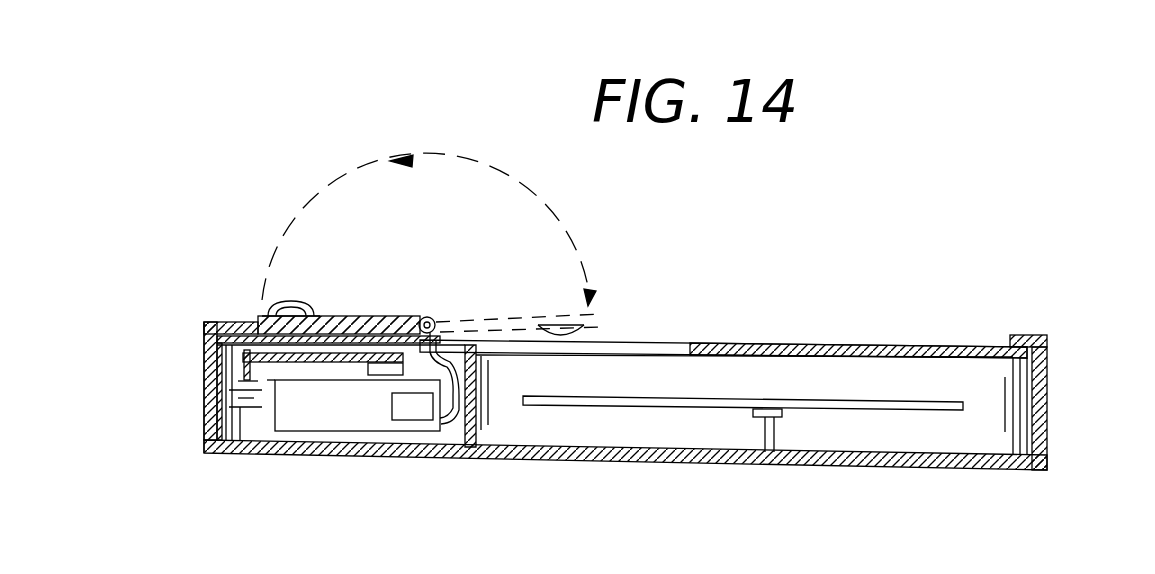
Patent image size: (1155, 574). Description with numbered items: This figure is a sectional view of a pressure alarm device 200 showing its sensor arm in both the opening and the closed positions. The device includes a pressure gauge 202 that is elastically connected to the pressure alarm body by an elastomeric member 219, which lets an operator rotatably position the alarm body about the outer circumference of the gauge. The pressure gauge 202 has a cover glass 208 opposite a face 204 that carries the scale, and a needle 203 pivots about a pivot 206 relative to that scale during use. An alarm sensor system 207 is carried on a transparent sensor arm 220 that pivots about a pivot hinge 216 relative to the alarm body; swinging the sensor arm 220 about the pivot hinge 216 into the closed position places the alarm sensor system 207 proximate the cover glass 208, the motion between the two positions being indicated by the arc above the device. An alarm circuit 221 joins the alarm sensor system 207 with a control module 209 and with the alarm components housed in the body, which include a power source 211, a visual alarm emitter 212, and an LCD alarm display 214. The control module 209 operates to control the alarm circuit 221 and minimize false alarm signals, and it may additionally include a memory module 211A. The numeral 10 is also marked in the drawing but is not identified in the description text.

The pressure alarm device 200 is at (259, 218).
The pressure gauge 202 is at (1000, 433).
The needle 203 is at (870, 401).
The face 204 is at (918, 454).
The pivot 206 is at (779, 436).
The alarm sensor system 207 is at (296, 299).
The cover glass 208 is at (942, 347).
The control module 209 is at (352, 424).
The electronic module 10 is at (293, 440).
The power source 211 is at (205, 427).
The memory module 211A is at (447, 422).
The visual alarm emitter 212 is at (386, 380).
The alarm display (LCD) 214 is at (203, 362).
The pivot hinge 216 is at (434, 318).
The elastomeric member 219 is at (203, 395).
The sensor arm 220 is at (350, 316).
The alarm circuit 221 is at (234, 445).